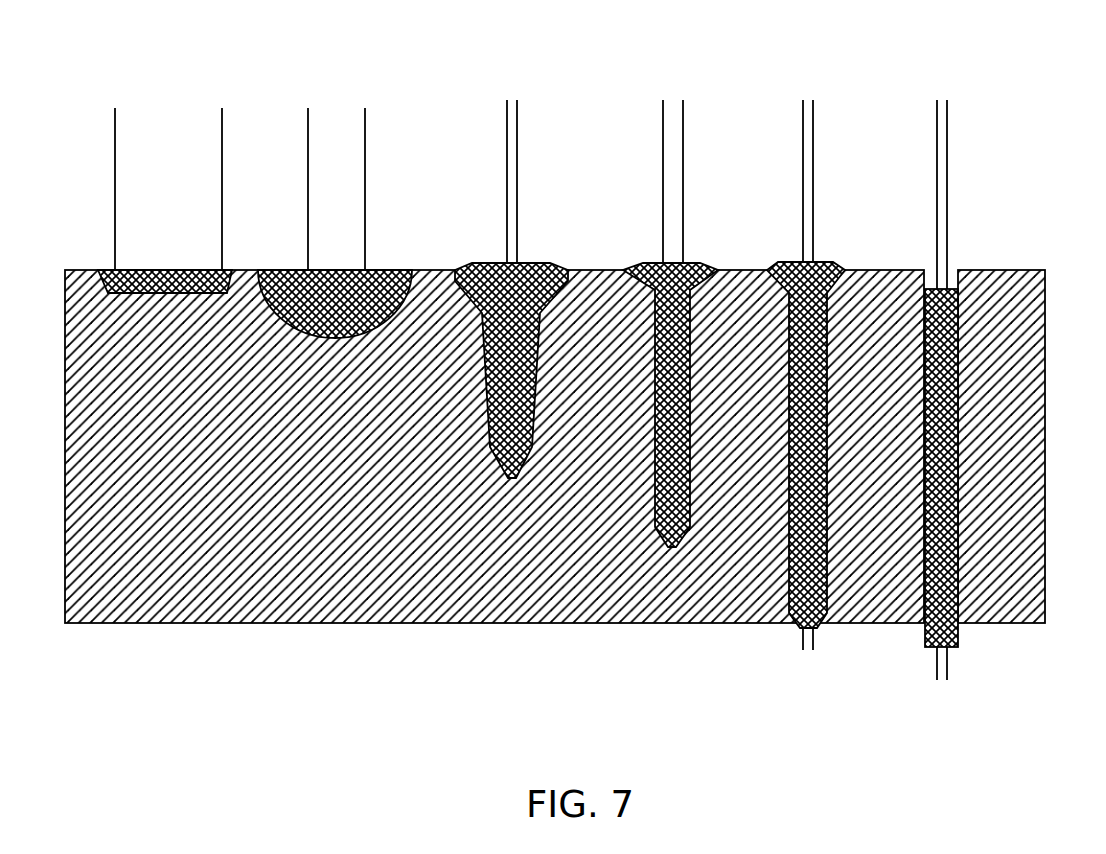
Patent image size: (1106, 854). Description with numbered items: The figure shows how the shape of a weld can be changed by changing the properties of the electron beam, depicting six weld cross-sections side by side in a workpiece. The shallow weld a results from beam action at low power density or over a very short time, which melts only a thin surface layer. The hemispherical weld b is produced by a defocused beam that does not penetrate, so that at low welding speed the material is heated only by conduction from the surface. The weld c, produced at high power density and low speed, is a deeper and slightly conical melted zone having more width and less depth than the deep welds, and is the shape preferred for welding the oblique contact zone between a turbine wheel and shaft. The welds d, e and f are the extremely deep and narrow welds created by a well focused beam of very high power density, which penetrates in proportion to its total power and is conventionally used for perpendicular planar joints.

The weld a is at (165, 155).
The weld b is at (335, 177).
The weld c is at (511, 247).
The weld d is at (670, 282).
The weld e is at (806, 333).
The weld f is at (941, 348).